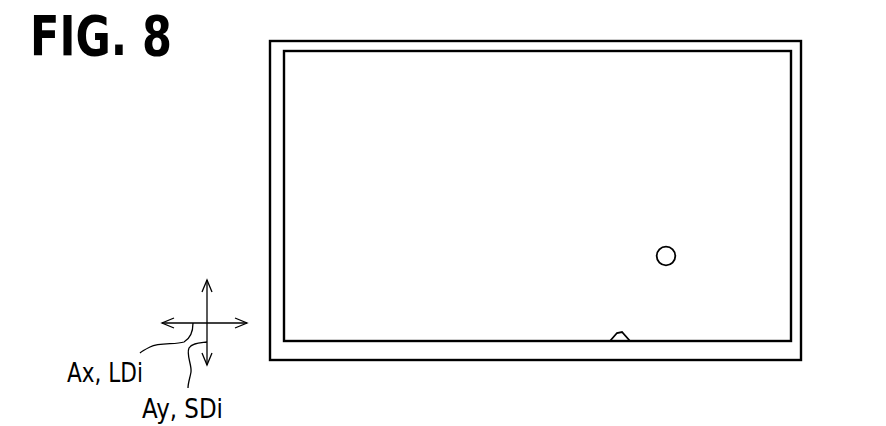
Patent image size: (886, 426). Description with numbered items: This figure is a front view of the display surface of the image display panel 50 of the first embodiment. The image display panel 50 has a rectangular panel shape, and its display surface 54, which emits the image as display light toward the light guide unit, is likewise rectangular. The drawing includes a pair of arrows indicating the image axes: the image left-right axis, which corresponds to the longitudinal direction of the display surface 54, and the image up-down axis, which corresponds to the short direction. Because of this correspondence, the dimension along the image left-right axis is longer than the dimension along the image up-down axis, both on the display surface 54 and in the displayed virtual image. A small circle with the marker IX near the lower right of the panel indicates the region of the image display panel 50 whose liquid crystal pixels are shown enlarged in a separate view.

The image display panel 50 is at (303, 360).
The display surface 54 is at (610, 342).
The section line for FIG. 9 IX is at (671, 264).